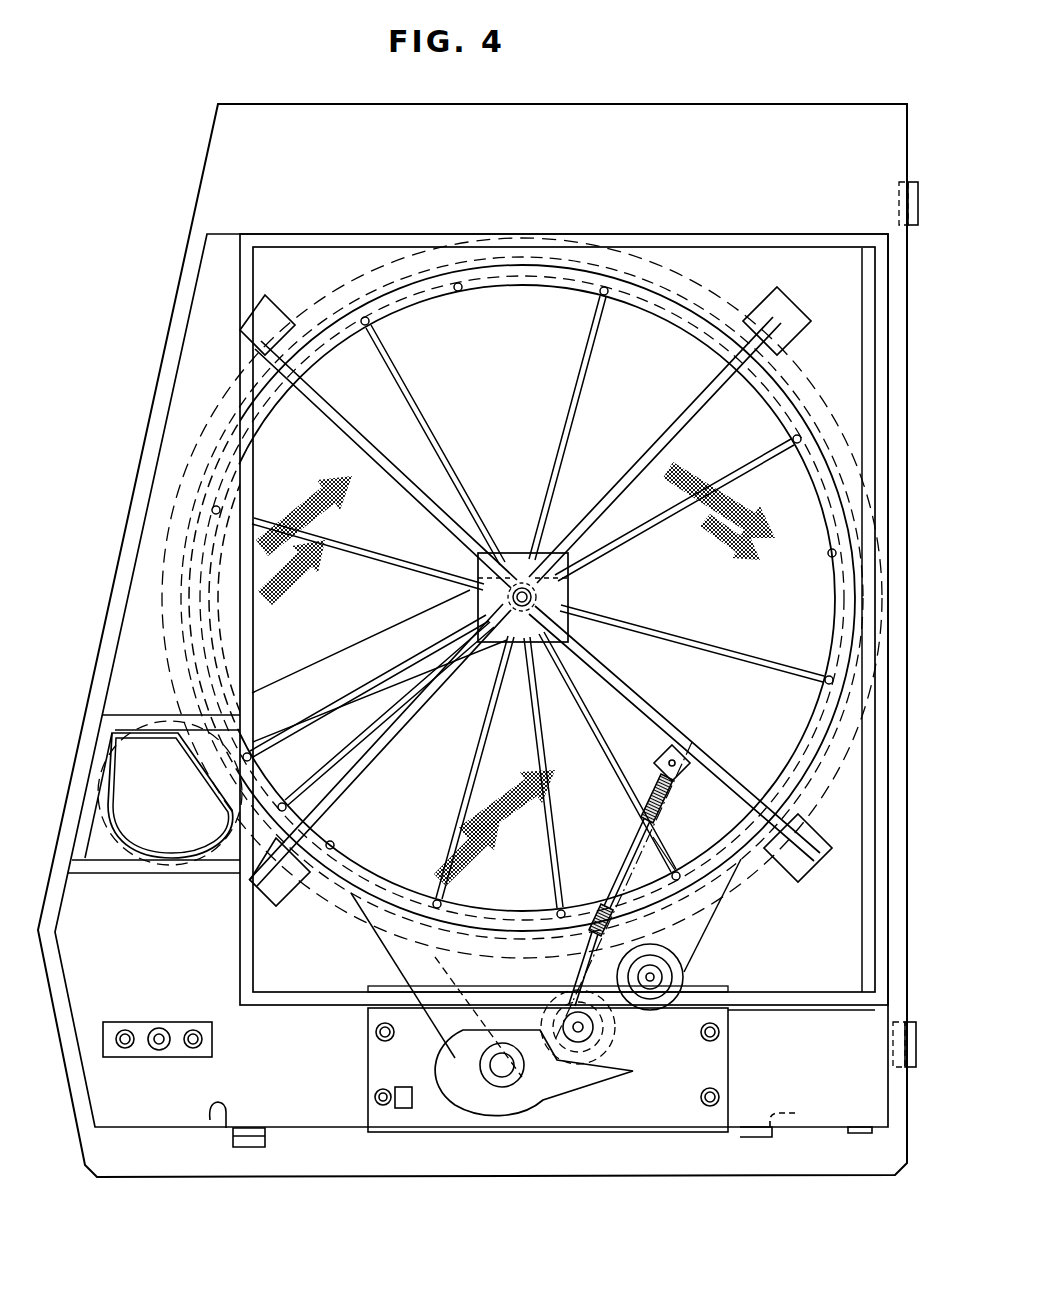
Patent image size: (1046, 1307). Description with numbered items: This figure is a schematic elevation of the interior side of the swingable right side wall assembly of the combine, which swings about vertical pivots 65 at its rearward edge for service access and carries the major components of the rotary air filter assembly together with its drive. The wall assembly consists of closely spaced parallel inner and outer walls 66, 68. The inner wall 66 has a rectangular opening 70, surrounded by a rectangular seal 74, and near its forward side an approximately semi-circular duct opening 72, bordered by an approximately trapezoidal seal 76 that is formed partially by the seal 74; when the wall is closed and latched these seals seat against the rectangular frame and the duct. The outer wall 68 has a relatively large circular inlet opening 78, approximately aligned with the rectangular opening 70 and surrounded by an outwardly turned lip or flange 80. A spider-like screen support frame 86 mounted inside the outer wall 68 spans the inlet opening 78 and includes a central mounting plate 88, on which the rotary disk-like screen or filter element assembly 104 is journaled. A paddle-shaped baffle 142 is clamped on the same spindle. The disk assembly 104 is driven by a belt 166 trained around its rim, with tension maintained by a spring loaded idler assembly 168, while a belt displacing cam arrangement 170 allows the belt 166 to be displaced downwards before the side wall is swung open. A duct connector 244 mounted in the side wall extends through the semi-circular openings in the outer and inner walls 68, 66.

The vertical pivots 65 is at (912, 182).
The inner wall 66 is at (222, 367).
The outer wall 68 is at (835, 283).
The rectangular opening 70 is at (306, 276).
The semi-circular duct opening 72 is at (133, 860).
The rectangular seal 74 is at (743, 243).
The trapezoidal seal 76 is at (97, 876).
The circular inlet opening 78 is at (458, 292).
The outwardly turned lip or flange 80 is at (378, 283).
The spider-like screen support frame 86 is at (631, 453).
The central mounting plate 88 is at (572, 590).
The rotary disk-like screen or filter element assembly 104 is at (640, 543).
The paddle-shaped baffle 142 is at (337, 637).
The belt 166 is at (707, 925).
The spring loaded idler assembly 168 is at (627, 1030).
The belt displacing cam arrangement 170 is at (577, 1104).
The duct connector 244 is at (176, 792).